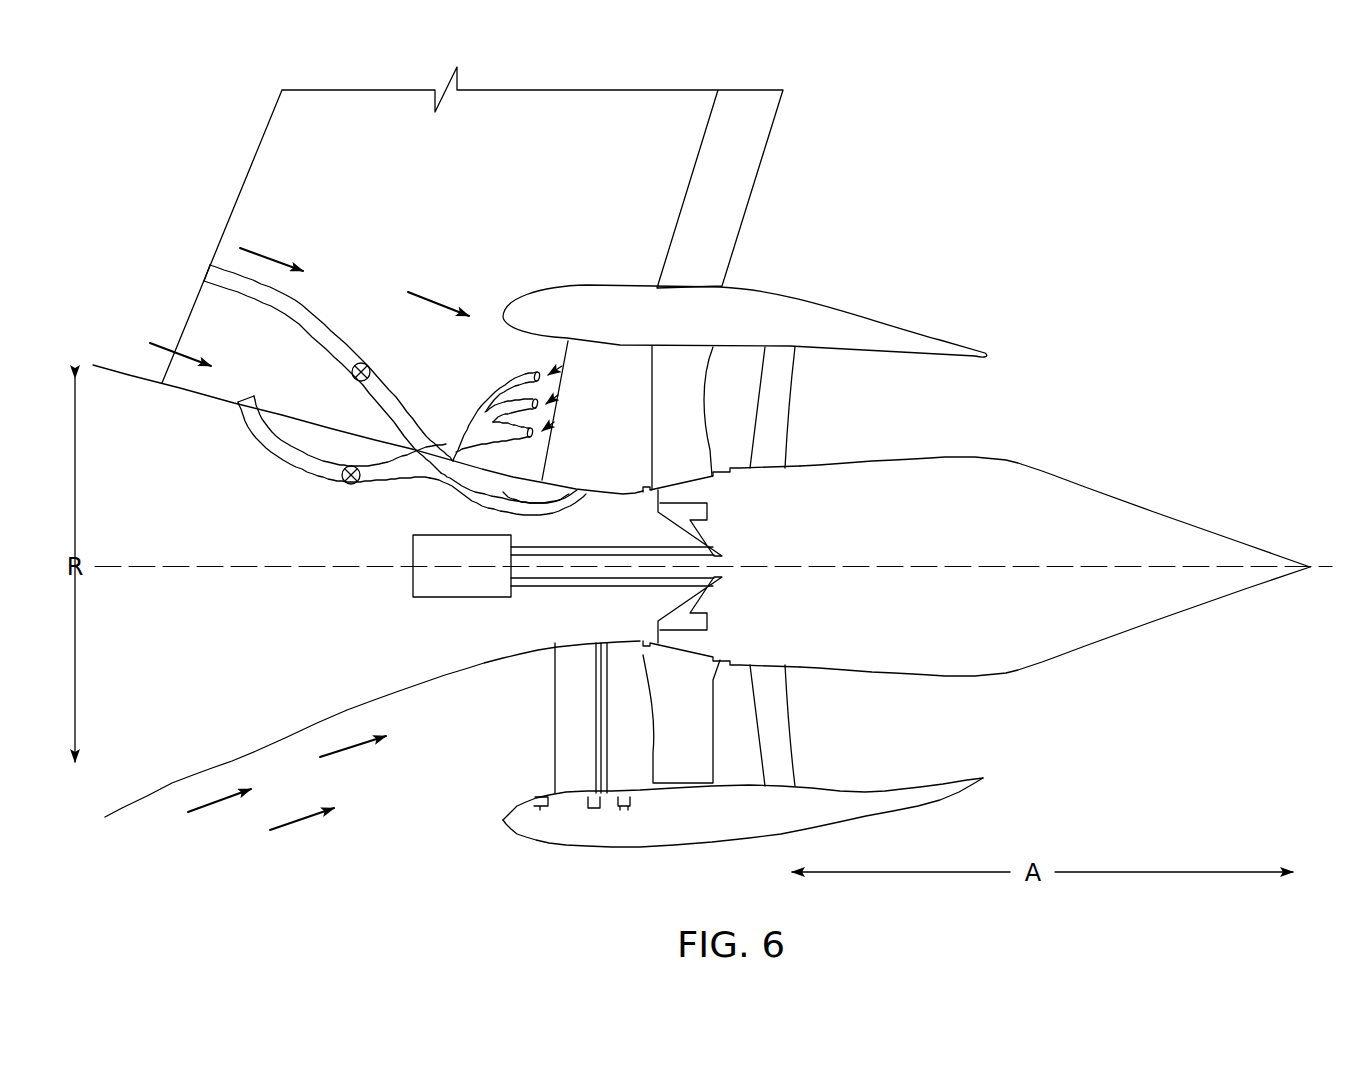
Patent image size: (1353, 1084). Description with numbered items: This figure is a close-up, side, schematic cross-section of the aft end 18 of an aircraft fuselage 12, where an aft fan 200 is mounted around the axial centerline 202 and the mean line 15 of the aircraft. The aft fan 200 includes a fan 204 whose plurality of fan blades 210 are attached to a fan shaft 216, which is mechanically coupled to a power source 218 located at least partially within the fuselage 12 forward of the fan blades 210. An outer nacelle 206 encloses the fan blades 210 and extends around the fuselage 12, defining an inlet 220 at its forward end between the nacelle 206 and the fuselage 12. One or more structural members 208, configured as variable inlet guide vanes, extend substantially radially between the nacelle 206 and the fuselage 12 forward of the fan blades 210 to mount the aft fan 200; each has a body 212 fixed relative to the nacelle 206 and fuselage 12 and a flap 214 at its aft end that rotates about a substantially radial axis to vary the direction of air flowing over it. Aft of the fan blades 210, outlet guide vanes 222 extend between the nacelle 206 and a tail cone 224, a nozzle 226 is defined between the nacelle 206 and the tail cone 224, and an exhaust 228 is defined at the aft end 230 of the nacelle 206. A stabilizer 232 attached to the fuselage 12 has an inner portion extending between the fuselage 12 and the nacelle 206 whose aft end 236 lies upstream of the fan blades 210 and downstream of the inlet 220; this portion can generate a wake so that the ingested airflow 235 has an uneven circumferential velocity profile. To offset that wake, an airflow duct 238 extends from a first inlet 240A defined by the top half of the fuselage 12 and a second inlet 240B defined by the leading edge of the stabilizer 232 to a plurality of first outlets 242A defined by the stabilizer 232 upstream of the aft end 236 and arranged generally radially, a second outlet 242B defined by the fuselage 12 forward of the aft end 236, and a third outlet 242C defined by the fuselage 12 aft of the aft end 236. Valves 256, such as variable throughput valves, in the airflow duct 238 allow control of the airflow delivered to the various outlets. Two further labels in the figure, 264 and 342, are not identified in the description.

The fuselage 12 is at (138, 364).
The mean line 15 is at (1107, 558).
The aft end 18 is at (852, 184).
The aft fan 200 is at (1052, 303).
The axial centerline 202 is at (1243, 560).
The fan 204 is at (710, 390).
The outer nacelle 206 is at (690, 368).
The structural members 208 is at (572, 767).
The fan blades 210 is at (748, 400).
The body 212 is at (575, 782).
The flap 214 is at (608, 795).
The fan shaft 216 is at (606, 587).
The power source 218 is at (463, 600).
The inlet 220 is at (533, 733).
The outlet guide vanes 222 is at (782, 735).
The tail cone 224 is at (1068, 472).
The nozzle 226 is at (962, 405).
The exhaust 228 is at (975, 716).
The aft end of the nacelle 230 is at (995, 771).
The stabilizer 232 is at (565, 88).
The airflow 235 is at (285, 262).
The aft end of the inner portion 236 is at (564, 464).
The airflow duct 238 is at (337, 323).
The first inlet 240A is at (250, 385).
The second inlet 240B is at (200, 260).
The first outlets 242A is at (558, 398).
The second outlet 242B is at (523, 466).
The third outlet 242C is at (592, 478).
The valves 256 is at (372, 368).
The manifold 264 is at (447, 452).
The fan inlet plane 342 is at (583, 362).